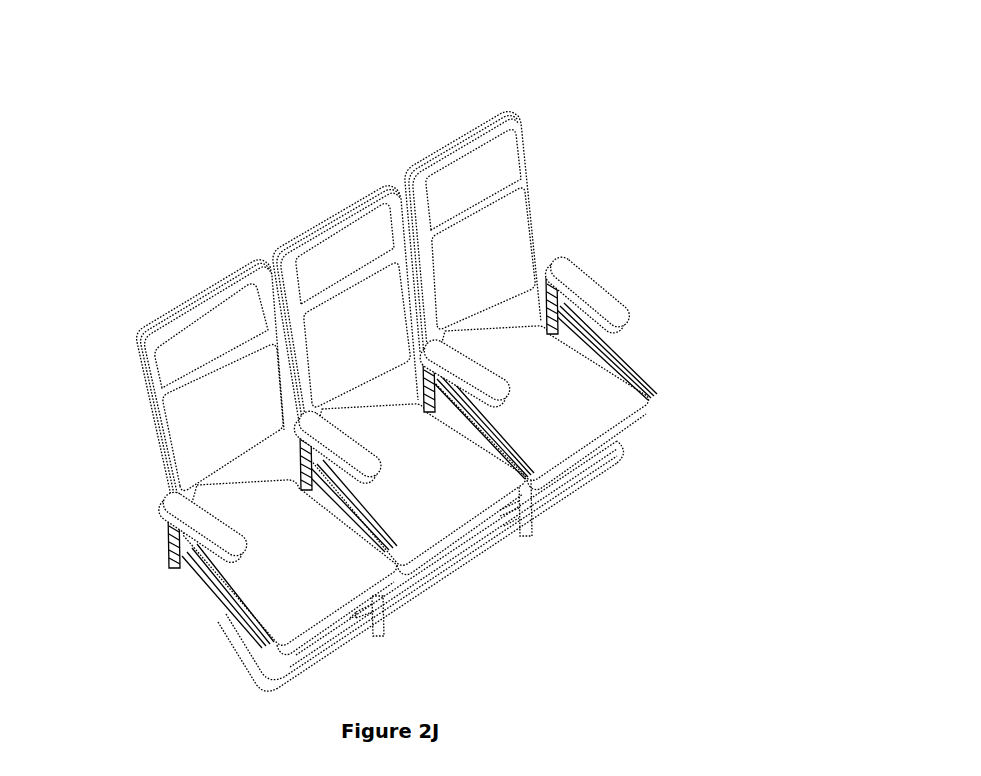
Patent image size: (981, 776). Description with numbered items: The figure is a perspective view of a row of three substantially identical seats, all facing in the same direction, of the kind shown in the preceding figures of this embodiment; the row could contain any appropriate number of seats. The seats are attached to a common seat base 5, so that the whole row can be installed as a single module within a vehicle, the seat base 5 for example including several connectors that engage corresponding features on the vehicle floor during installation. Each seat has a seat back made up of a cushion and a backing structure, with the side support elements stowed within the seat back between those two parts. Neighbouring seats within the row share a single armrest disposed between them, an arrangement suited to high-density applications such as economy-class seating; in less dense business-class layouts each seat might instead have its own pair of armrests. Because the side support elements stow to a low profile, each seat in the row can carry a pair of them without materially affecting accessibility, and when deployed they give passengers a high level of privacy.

The seat base 5 is at (497, 533).